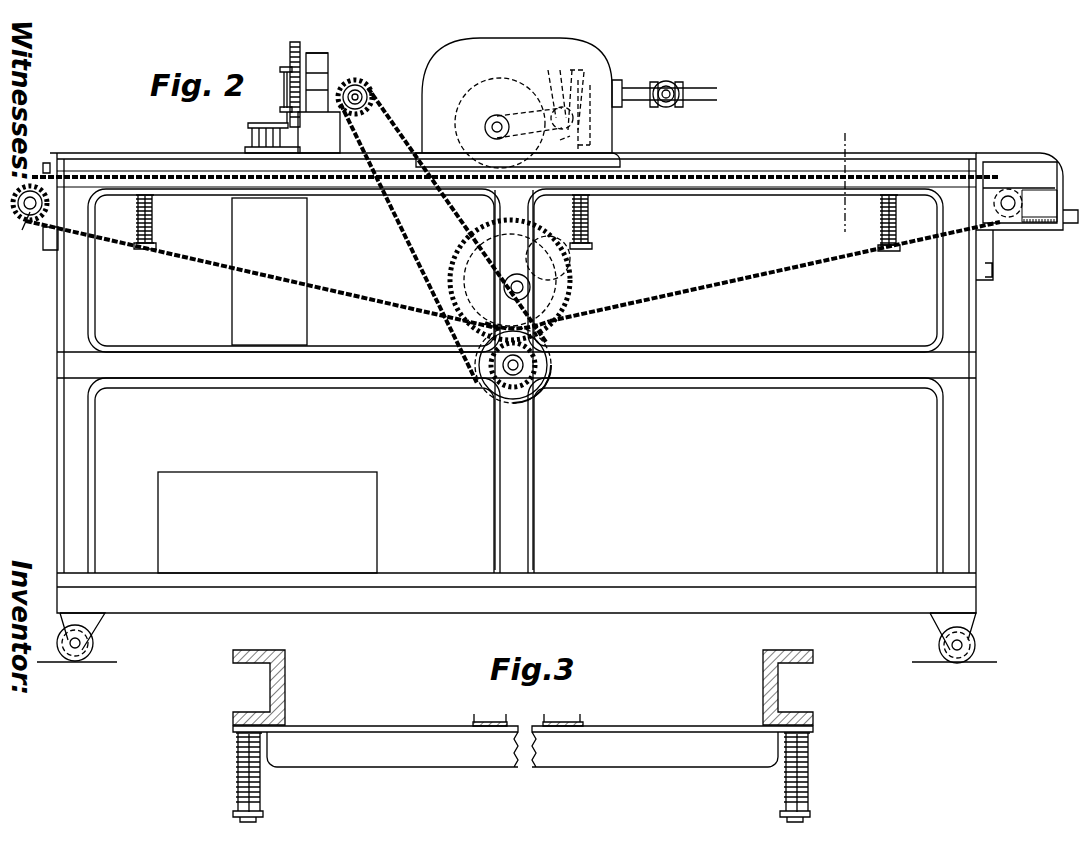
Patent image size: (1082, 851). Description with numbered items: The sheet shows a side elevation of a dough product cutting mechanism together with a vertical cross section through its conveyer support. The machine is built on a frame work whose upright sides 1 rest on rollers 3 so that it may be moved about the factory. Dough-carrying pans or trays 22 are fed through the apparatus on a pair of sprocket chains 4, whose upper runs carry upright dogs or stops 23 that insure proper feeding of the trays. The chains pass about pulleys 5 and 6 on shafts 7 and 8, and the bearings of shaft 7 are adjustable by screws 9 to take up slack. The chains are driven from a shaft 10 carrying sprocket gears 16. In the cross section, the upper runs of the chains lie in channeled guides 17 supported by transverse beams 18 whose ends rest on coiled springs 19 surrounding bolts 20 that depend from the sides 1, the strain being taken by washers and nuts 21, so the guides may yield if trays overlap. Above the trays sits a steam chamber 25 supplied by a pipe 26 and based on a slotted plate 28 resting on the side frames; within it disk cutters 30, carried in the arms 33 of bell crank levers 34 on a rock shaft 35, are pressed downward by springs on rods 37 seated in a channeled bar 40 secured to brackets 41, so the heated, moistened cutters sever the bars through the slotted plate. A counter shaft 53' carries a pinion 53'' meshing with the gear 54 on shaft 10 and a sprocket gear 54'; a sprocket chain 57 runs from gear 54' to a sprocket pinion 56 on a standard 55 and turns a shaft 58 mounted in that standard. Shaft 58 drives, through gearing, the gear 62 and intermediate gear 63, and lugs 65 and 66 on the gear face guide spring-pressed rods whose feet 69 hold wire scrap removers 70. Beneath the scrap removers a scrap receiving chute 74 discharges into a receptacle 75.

In FIG. 2, the upright side 1 is at (808, 366).
In FIG. 3, the upright side 1 is at (762, 688).
In FIG. 2, the roller 3 is at (92, 645).
In FIG. 2, the sprocket chain 4 is at (218, 268).
In FIG. 2, the pulley 5 is at (995, 200).
In FIG. 2, the pulley 6 is at (32, 188).
In FIG. 2, the shaft 7 is at (1010, 210).
In FIG. 2, the shaft 8 is at (19, 229).
In FIG. 2, the screw 9 is at (1045, 205).
In FIG. 2, the shaft 10 is at (499, 227).
In FIG. 2, the sprocket gear 16 is at (459, 257).
In FIG. 3, the channeled guide 17 is at (582, 721).
In FIG. 3, the transverse beam 18 is at (472, 760).
In FIG. 2, the coiled spring 19 is at (908, 210).
In FIG. 3, the coiled spring 19 is at (810, 762).
In FIG. 2, the bolt 20 is at (912, 232).
In FIG. 3, the bolt 20 is at (764, 783).
In FIG. 2, the nut 21 is at (887, 275).
In FIG. 3, the nut 21 is at (782, 820).
In FIG. 2, the tray 22 is at (190, 170).
In FIG. 2, the dog 23 is at (726, 149).
In FIG. 2, the chamber 25 is at (598, 63).
In FIG. 2, the pipe 26 is at (706, 92).
In FIG. 2, the base plate 28 is at (618, 152).
In FIG. 2, the disk cutter 30 is at (471, 96).
In FIG. 2, the arm 33 is at (516, 116).
In FIG. 2, the bell crank lever 34 is at (545, 92).
In FIG. 2, the rock shaft 35 is at (558, 70).
In FIG. 2, the rod 37 is at (576, 70).
In FIG. 2, the channeled bar 40 is at (593, 111).
In FIG. 2, the bracket 41 is at (576, 140).
In FIG. 2, the counter shaft 53' is at (495, 369).
In FIG. 2, the pinion 53'' is at (507, 379).
In FIG. 2, the gear 54 is at (548, 241).
In FIG. 2, the sprocket gear 54' is at (559, 359).
In FIG. 2, the standard 55 is at (334, 136).
In FIG. 2, the sprocket pinion 56 is at (370, 80).
In FIG. 2, the sprocket chain 57 is at (393, 214).
In FIG. 2, the shaft 58 is at (370, 97).
In FIG. 2, the gear 62 is at (290, 42).
In FIG. 2, the intermediate gear 63 is at (322, 70).
In FIG. 2, the lug 65 is at (283, 67).
In FIG. 2, the lug 66 is at (280, 110).
In FIG. 2, the foot 69 is at (248, 124).
In FIG. 2, the scrap remover 70 is at (250, 134).
In FIG. 2, the scrap receiving chute 74 is at (300, 247).
In FIG. 2, the receptacle 75 is at (377, 525).